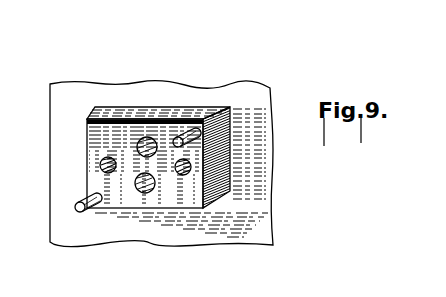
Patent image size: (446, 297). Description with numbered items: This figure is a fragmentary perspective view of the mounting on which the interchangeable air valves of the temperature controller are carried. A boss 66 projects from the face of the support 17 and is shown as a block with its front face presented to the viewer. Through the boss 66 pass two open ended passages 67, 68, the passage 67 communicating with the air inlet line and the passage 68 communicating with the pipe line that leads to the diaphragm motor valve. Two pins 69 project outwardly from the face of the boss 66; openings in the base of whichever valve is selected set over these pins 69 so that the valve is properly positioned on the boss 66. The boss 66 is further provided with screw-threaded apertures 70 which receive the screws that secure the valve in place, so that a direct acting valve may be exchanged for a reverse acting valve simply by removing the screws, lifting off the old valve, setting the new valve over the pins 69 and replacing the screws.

The support 17 is at (267, 93).
The boss 66 is at (150, 108).
The open ended passage 67 is at (145, 193).
The open ended passage 68 is at (141, 139).
The pins 69 is at (187, 131).
The screw-threaded apertures 70 is at (100, 167).